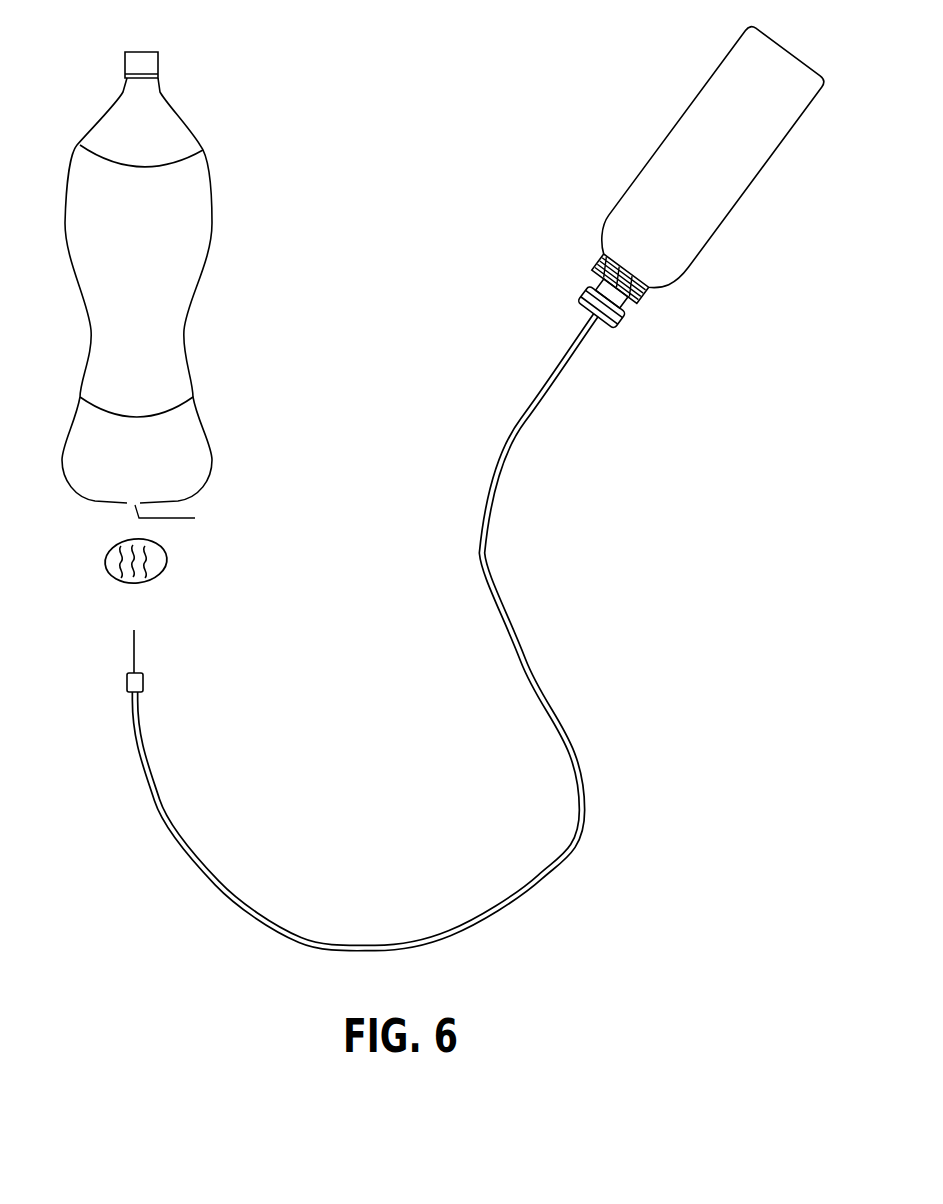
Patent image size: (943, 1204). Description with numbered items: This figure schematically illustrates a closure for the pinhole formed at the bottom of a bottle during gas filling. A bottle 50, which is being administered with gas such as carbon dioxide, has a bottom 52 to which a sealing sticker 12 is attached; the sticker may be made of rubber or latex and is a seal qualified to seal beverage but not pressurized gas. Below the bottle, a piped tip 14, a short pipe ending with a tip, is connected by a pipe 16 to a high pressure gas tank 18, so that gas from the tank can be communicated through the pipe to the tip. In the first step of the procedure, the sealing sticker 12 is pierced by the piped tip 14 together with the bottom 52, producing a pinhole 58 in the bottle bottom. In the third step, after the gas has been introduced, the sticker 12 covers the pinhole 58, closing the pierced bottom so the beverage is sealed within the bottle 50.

The bottle 50 is at (203, 172).
The bottom of the bottle 52 is at (112, 500).
The pinhole 58 is at (185, 493).
The sealing sticker 12 is at (167, 558).
The pipe tip 14 is at (136, 660).
The pipe 16 is at (499, 592).
The high pressure gas tank 18 is at (660, 193).